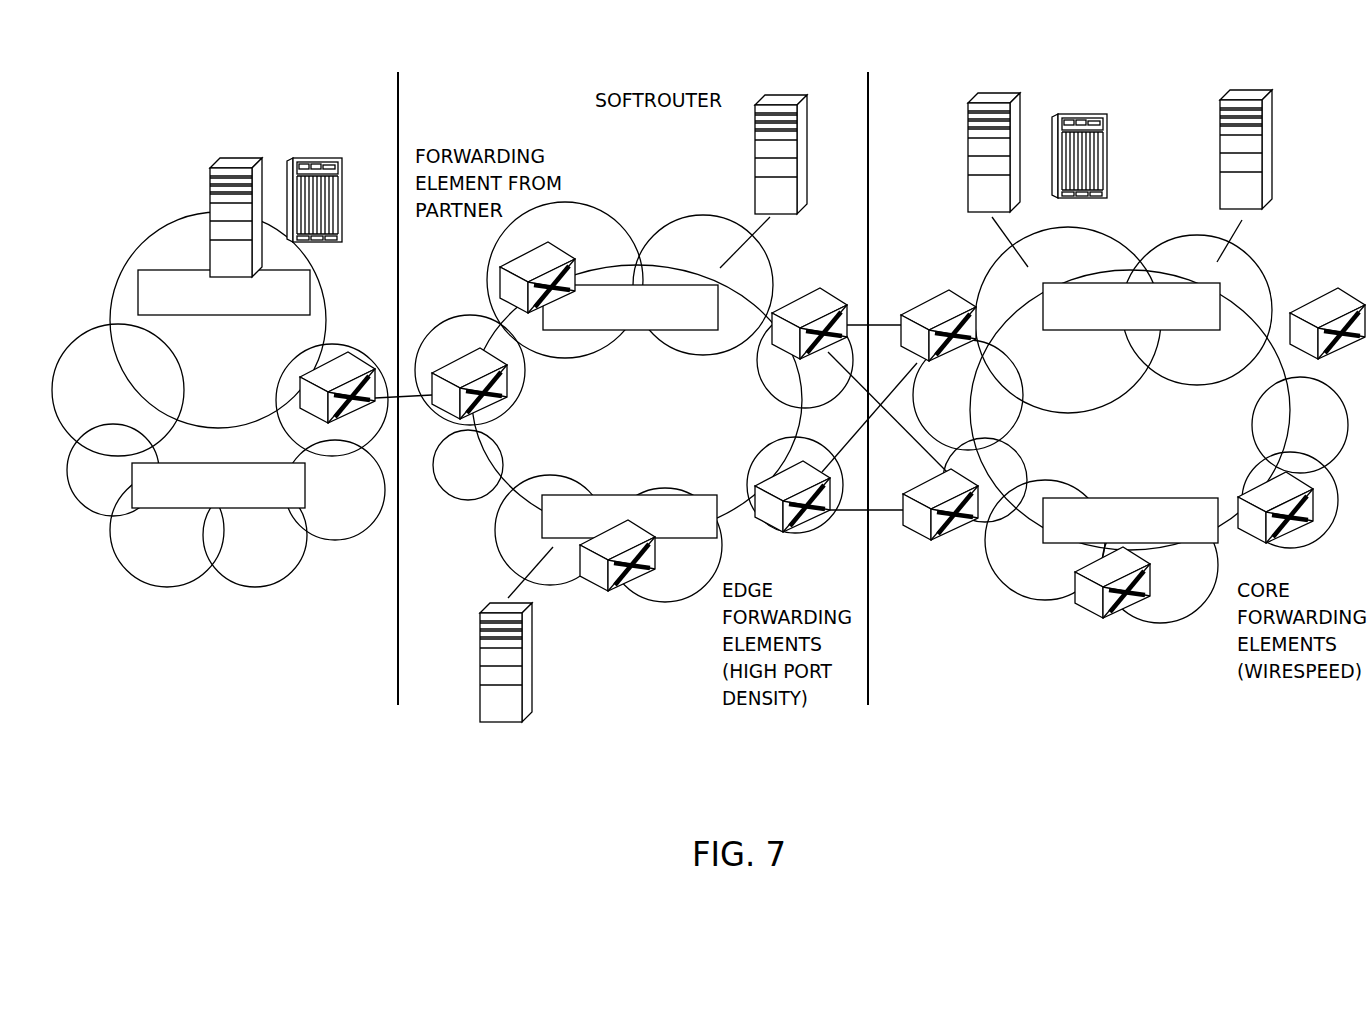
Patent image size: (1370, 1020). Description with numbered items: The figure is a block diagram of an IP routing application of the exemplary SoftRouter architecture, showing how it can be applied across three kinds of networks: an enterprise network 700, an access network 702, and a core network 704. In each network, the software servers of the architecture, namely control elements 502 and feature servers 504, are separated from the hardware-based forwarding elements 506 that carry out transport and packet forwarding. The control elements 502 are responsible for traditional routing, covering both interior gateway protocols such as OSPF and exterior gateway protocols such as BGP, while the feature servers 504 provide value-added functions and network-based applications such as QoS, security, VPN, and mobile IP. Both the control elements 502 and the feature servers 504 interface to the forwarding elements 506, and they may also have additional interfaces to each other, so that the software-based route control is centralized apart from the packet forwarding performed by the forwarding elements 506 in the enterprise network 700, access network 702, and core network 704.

The control element 502 is at (752, 143).
The feature server 504 is at (283, 178).
The forwarding element 506 is at (320, 363).
The enterprise network 700 is at (153, 618).
The access network 702 is at (495, 754).
The core network 704 is at (1018, 648).